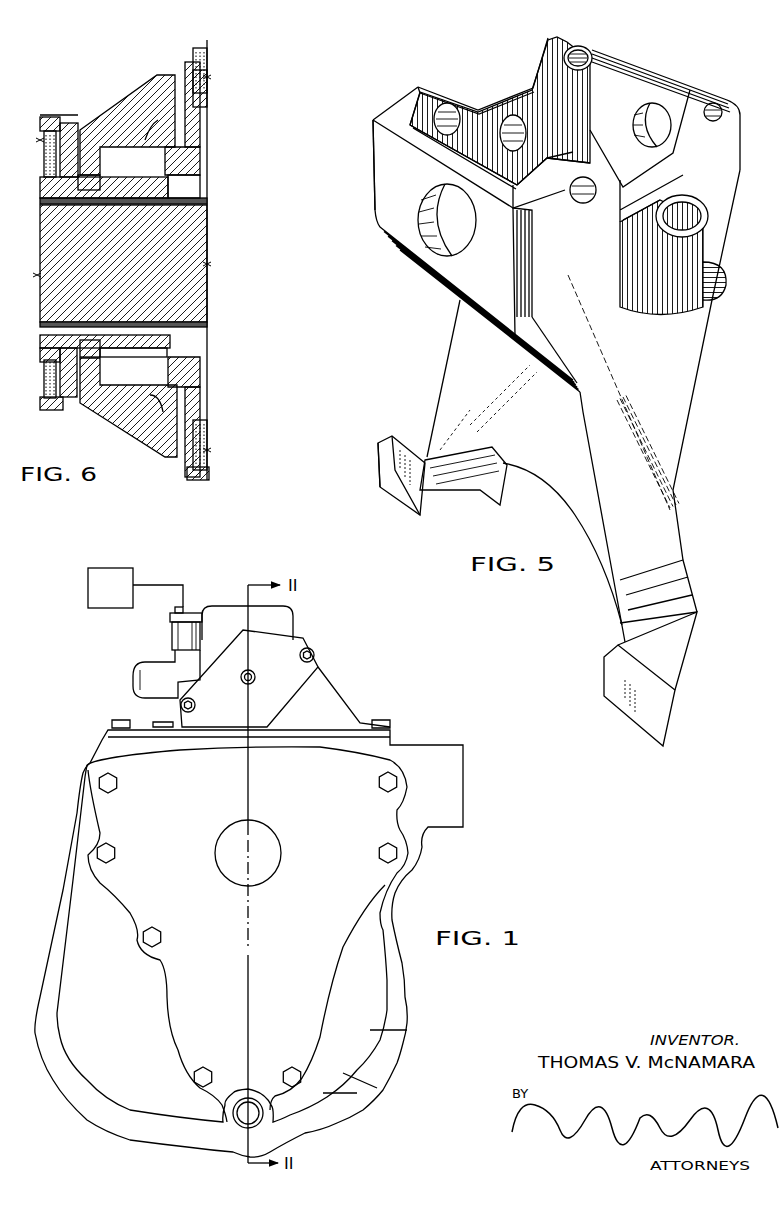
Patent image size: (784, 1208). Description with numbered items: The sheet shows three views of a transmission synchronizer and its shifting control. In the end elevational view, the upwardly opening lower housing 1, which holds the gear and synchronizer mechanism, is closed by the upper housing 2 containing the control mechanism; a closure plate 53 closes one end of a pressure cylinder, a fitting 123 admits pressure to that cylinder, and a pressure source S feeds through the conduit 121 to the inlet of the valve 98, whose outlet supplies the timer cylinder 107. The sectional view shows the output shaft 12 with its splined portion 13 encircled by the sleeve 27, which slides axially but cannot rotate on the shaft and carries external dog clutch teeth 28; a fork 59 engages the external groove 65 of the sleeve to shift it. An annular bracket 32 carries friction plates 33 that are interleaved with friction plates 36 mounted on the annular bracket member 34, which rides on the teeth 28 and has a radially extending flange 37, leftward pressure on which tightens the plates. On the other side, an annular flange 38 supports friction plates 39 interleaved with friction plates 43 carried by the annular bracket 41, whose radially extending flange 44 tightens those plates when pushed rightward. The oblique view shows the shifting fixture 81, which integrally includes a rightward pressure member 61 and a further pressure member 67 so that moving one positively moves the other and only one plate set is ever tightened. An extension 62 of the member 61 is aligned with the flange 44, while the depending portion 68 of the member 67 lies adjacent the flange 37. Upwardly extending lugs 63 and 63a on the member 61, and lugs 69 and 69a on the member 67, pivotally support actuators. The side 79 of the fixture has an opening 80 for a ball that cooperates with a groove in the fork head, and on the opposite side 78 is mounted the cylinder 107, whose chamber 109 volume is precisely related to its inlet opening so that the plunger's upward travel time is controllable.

In FIG. 1, the lower housing 1 is at (428, 870).
In FIG. 1, the upper housing 2 is at (348, 705).
In FIG. 6, the output shaft 12 is at (190, 233).
In FIG. 1, the output shaft 12 is at (268, 845).
In FIG. 6, the splined portion 13 is at (207, 200).
In FIG. 6, the sleeve 27 is at (145, 186).
In FIG. 6, the external dog clutch teeth 28 is at (140, 352).
In FIG. 6, the annular bracket 32 is at (42, 410).
In FIG. 6, the friction plates 33 is at (50, 116).
In FIG. 6, the annular bracket member 34 is at (52, 340).
In FIG. 6, the friction plates 36 is at (44, 135).
In FIG. 6, the radially extending flange 37 is at (70, 124).
In FIG. 6, the annular flange 38 is at (205, 478).
In FIG. 6, the friction plates 39 is at (206, 52).
In FIG. 6, the annular bracket 41 is at (190, 155).
In FIG. 6, the friction plates 43 is at (206, 97).
In FIG. 6, the radially extending flange 44 is at (192, 62).
In FIG. 1, the closure plate 53 is at (293, 636).
In FIG. 6, the fork 59 is at (80, 183).
In FIG. 5, the rightward pressure member 61 is at (403, 250).
In FIG. 6, the extension 62 is at (165, 105).
In FIG. 5, the extension 62 is at (385, 463).
In FIG. 5, the lug 63 is at (553, 175).
In FIG. 5, the lug 63a is at (419, 87).
In FIG. 6, the external groove 65 is at (58, 356).
In FIG. 5, the pressure member 67 is at (703, 360).
In FIG. 6, the depending portion 68 is at (95, 395).
In FIG. 5, the depending portion 68 is at (508, 475).
In FIG. 5, the lug 69 is at (690, 97).
In FIG. 5, the lug 69a is at (585, 48).
In FIG. 5, the side 78 is at (648, 164).
In FIG. 5, the side 79 is at (515, 97).
In FIG. 5, the opening 80 is at (507, 115).
In FIG. 5, the shifting fixture 81 is at (390, 106).
In FIG. 1, the valve 98 is at (172, 642).
In FIG. 5, the cylinder 107 is at (693, 257).
In FIG. 5, the chamber 109 is at (687, 203).
In FIG. 1, the conduit 121 is at (135, 588).
In FIG. 1, the fitting 123 is at (256, 679).